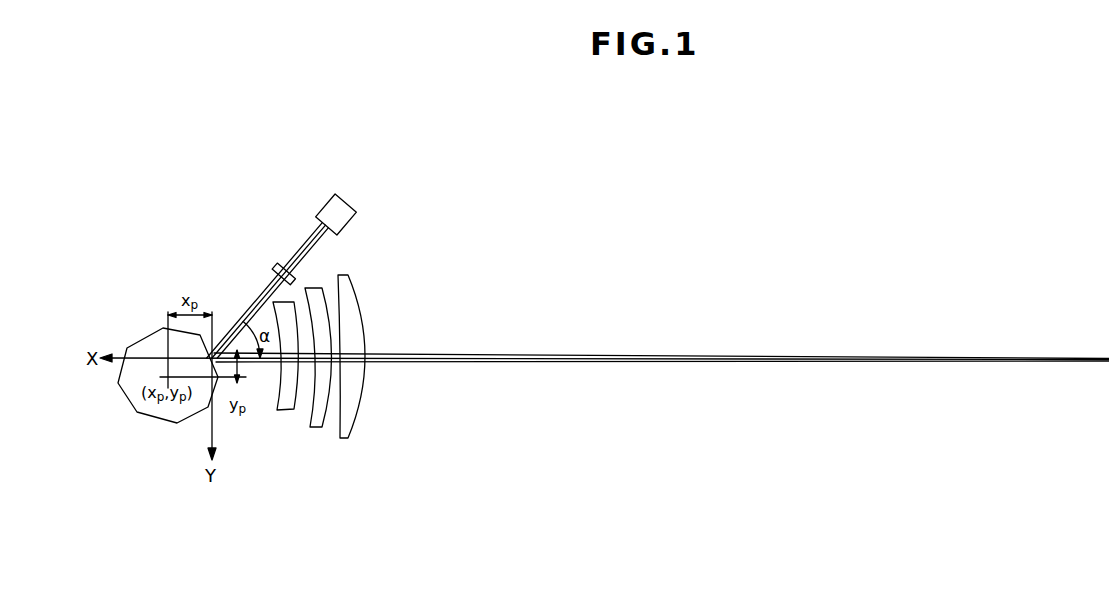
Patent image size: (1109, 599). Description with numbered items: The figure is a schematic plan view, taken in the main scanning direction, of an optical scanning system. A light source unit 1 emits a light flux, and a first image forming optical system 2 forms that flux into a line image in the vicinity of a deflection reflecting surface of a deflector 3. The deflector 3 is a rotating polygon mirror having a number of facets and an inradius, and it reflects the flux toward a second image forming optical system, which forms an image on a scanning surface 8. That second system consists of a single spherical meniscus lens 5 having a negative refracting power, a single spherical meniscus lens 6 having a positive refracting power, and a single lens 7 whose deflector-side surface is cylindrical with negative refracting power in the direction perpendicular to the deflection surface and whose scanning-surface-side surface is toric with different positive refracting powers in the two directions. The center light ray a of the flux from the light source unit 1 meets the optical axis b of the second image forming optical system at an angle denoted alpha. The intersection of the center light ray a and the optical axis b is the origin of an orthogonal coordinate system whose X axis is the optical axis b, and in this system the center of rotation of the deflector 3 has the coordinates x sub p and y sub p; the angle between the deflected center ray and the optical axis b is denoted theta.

The light source unit 1 is at (322, 203).
The first image forming optical system 2 is at (276, 265).
The deflector 3 is at (157, 419).
The spherical meniscus lens 5 is at (286, 412).
The spherical meniscus lens 6 is at (316, 429).
The lens having a cylindrical surface 7 is at (345, 440).
The scanning surface 8 is at (1108, 247).
The center light ray a is at (251, 303).
The optical axis b is at (277, 363).